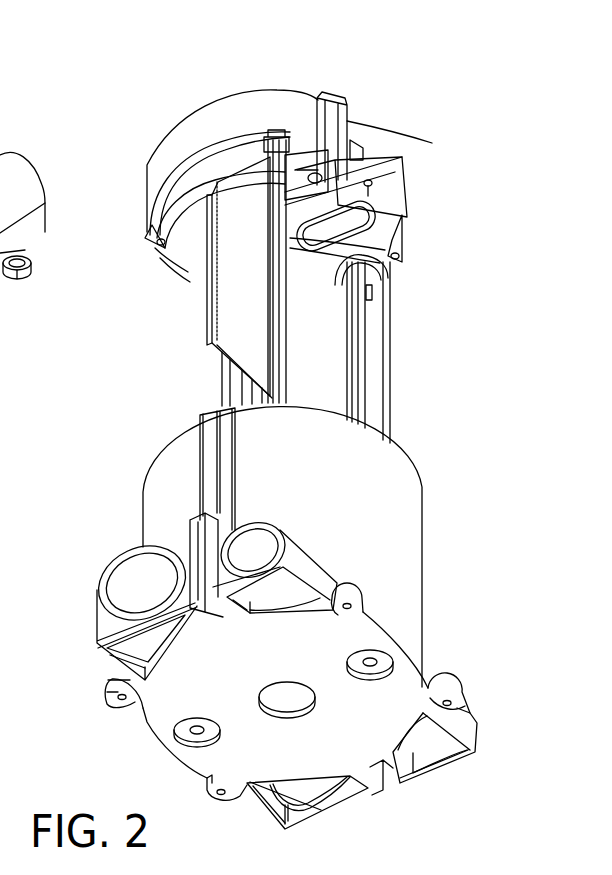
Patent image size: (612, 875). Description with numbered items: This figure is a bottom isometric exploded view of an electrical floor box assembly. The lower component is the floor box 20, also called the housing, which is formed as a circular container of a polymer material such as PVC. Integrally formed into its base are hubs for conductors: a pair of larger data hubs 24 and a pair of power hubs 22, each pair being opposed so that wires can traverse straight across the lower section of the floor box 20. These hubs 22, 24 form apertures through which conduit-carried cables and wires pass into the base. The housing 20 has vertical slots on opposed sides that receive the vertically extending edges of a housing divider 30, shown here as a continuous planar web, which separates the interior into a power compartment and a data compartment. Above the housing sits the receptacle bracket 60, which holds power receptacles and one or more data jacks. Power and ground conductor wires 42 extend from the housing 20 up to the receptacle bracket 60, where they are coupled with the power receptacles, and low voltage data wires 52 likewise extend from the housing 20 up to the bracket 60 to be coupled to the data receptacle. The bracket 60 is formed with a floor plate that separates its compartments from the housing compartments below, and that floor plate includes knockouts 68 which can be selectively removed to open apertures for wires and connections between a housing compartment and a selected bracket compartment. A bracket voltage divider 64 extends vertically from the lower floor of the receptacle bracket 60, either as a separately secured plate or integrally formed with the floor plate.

The receptacle bracket 60 is at (240, 120).
The knockouts 68 is at (390, 250).
The bracket voltage divider 64 is at (235, 198).
The housing divider 30 is at (210, 306).
The low voltage data wires 52 is at (222, 389).
The power and ground conductor wires 42 is at (330, 318).
The power hubs 22 is at (22, 228).
The floor box 20 is at (153, 501).
The data hubs 24 is at (127, 583).